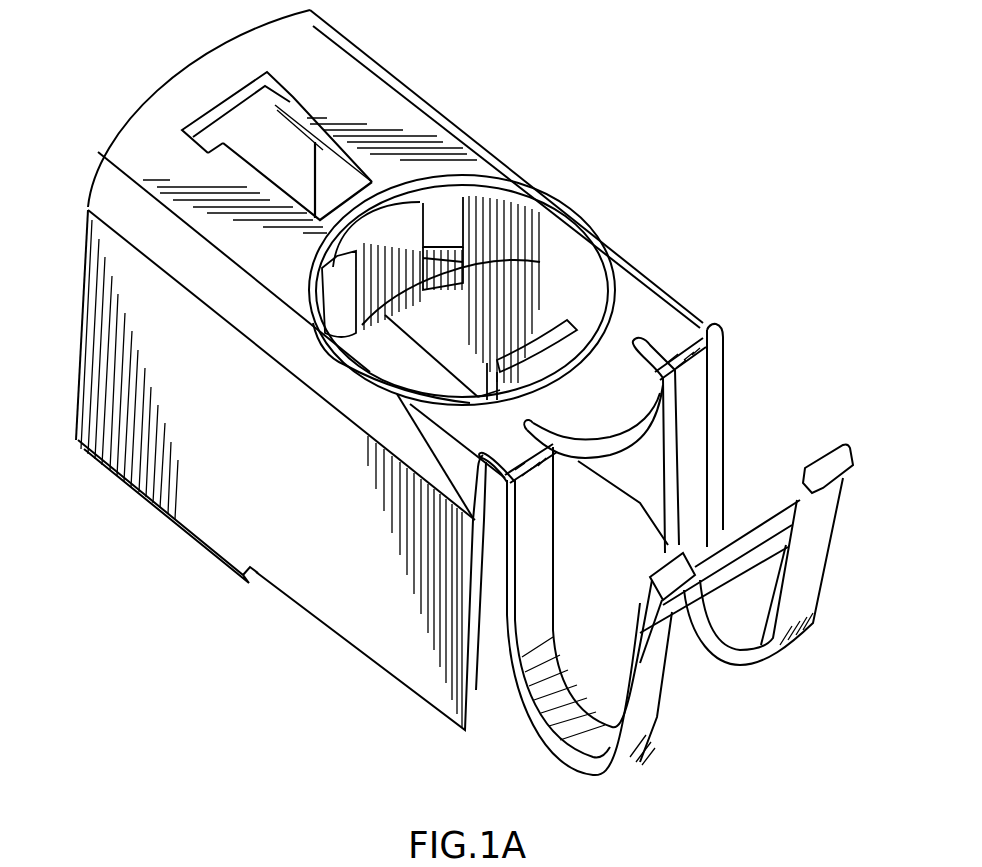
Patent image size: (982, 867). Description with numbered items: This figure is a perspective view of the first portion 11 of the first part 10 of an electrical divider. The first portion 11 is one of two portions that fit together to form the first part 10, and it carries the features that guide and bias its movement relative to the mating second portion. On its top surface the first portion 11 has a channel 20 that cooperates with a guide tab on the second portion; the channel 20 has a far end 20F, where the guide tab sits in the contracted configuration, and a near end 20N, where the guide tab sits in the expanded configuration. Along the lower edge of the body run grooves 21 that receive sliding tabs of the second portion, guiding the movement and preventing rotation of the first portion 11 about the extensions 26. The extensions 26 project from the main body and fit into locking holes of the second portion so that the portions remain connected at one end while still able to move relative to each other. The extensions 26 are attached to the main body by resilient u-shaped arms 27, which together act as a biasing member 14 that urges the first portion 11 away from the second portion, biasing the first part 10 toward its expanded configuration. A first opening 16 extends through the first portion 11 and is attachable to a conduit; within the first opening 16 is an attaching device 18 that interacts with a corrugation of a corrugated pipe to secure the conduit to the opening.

The first part 10 is at (150, 592).
The first portion 11 is at (193, 603).
The biasing member 14 is at (679, 549).
The first opening 16 is at (497, 290).
The attaching device 18 is at (412, 267).
The channel 20 is at (321, 118).
The far end 20F is at (210, 110).
The near end 20N is at (327, 197).
The grooves 21 is at (140, 502).
The extensions 26 is at (690, 552).
The resilient u-shaped arms 27 is at (725, 662).